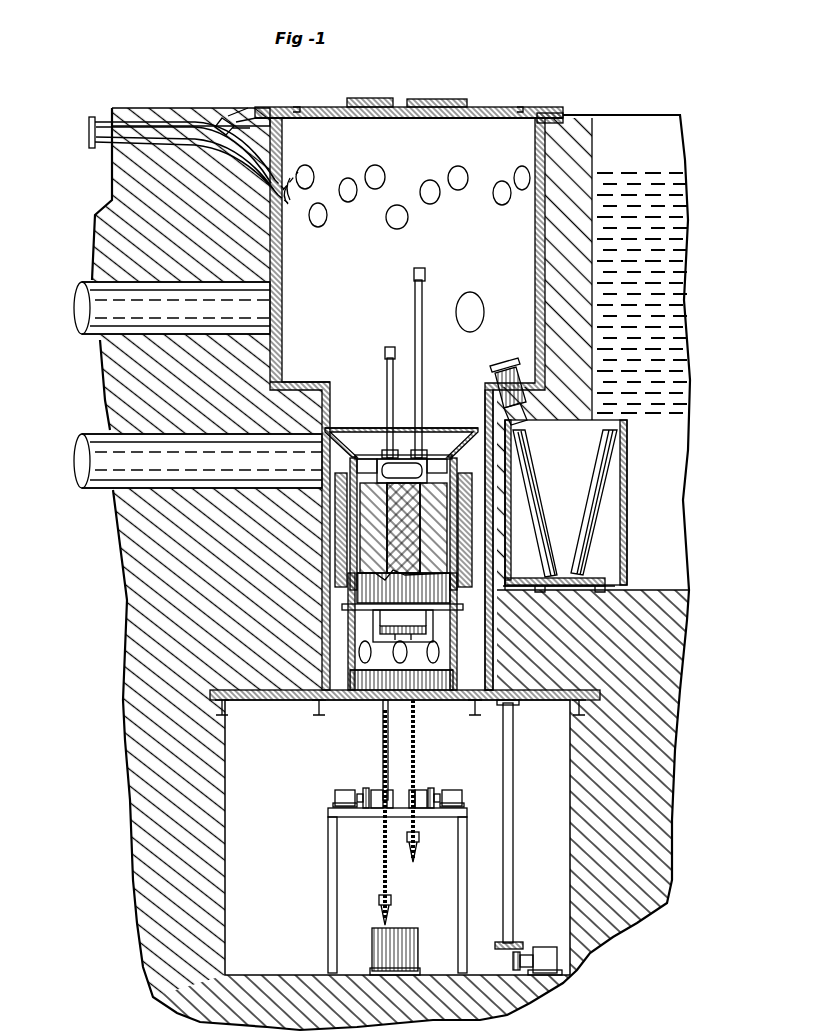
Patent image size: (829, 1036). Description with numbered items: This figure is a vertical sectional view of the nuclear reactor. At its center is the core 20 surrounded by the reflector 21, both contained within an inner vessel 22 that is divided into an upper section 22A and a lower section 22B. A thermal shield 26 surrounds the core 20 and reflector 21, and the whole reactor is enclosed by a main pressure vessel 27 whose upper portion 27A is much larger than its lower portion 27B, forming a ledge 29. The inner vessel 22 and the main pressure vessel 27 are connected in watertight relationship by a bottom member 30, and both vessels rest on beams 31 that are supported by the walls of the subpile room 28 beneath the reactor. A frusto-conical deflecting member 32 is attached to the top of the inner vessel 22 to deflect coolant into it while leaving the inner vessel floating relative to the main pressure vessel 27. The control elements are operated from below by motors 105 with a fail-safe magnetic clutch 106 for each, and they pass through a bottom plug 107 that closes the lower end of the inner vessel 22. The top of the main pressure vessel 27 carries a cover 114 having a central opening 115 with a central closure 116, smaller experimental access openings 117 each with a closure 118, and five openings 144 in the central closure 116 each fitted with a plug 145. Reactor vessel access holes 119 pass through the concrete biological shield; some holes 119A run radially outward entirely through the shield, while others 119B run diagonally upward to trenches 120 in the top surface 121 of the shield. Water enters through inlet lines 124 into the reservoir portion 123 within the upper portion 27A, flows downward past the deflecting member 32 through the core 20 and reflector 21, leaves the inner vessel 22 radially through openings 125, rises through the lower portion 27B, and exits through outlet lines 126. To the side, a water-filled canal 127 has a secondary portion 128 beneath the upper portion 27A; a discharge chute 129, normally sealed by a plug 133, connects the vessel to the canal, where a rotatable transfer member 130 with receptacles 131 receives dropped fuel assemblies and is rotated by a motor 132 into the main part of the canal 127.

The core 20 is at (418, 521).
The reflector 21 is at (362, 500).
The inner vessel 22 is at (340, 548).
The upper section 22A is at (348, 584).
The lower section 22B is at (350, 620).
The thermal shield 26 is at (337, 522).
The main pressure vessel 27 is at (282, 262).
The upper portion 27A is at (535, 215).
The lower portion 27B is at (486, 418).
The subpile room 28 is at (560, 768).
The ledge 29 is at (282, 385).
The bottom member 30 is at (346, 676).
The beams 31 is at (316, 708).
The frusto-conical deflecting member 32 is at (336, 444).
The motors 105 is at (340, 795).
The fail-safe magnetic clutch 106 is at (362, 790).
The bottom plug 107 is at (378, 705).
The cover 114 is at (475, 104).
The central opening 115 is at (366, 100).
The central closure 116 is at (448, 119).
The experimental access openings 117 is at (315, 120).
The closure 118 is at (306, 108).
The reactor vessel access holes 119 is at (218, 160).
The radial access holes 119A is at (90, 147).
The diagonal access holes 119B is at (284, 164).
The trenches 120 is at (220, 114).
The top surface 121 is at (135, 112).
The reservoir portion 123 is at (420, 256).
The inlet lines 124 is at (90, 292).
The openings 125 is at (365, 660).
The outlet lines 126 is at (90, 445).
The canal 127 is at (668, 330).
The secondary portion 128 is at (598, 418).
The discharge chute 129 is at (520, 412).
The rotatable transfer member 130 is at (618, 484).
The receptacles 131 is at (598, 456).
The motor 132 is at (548, 946).
The plug 133 is at (505, 370).
The openings 144 is at (406, 119).
The plug 145 is at (418, 101).